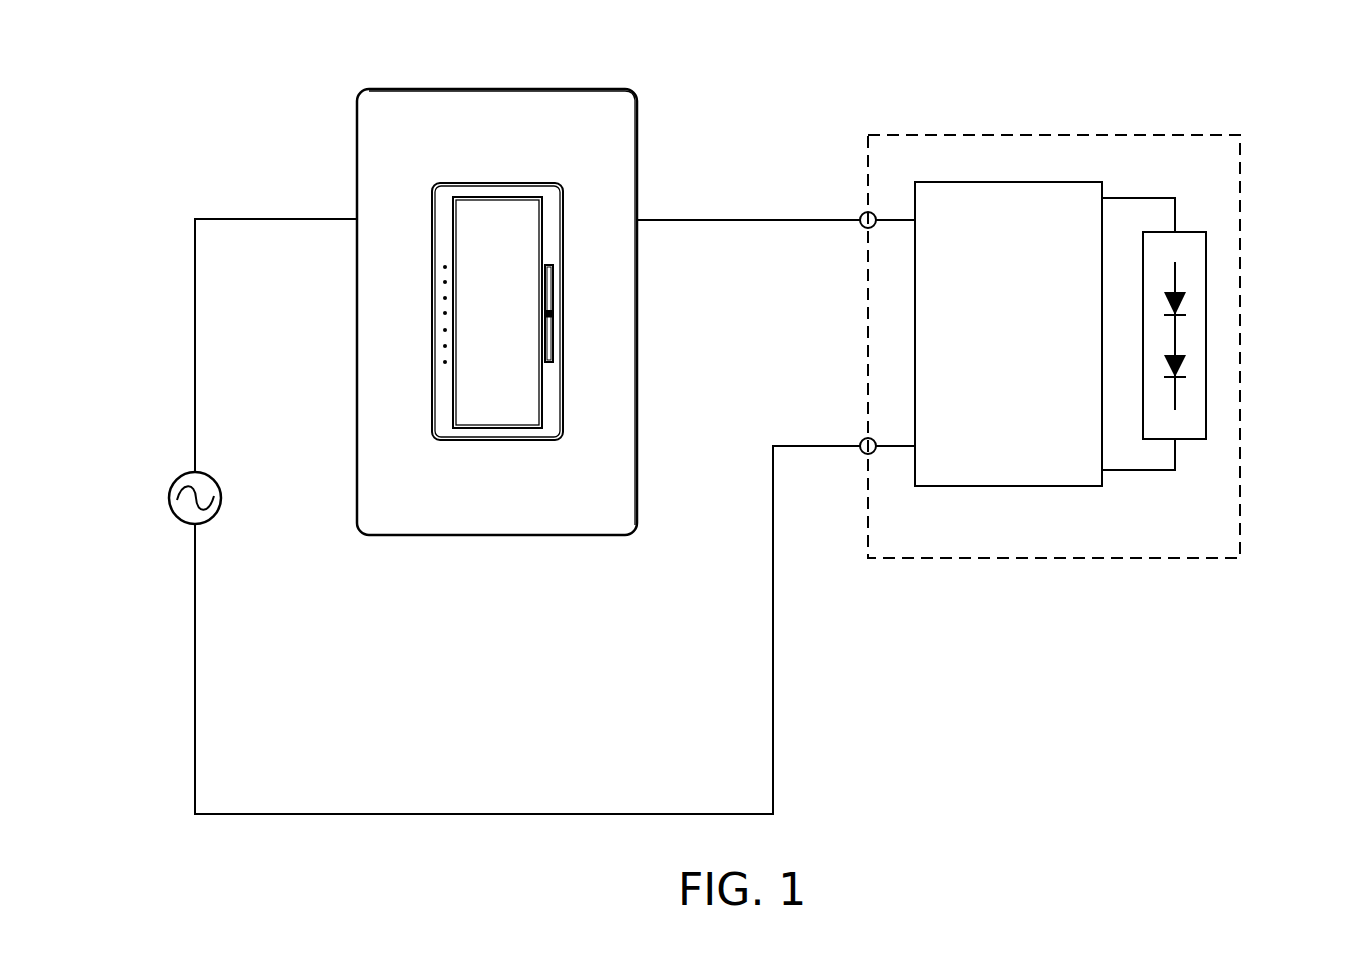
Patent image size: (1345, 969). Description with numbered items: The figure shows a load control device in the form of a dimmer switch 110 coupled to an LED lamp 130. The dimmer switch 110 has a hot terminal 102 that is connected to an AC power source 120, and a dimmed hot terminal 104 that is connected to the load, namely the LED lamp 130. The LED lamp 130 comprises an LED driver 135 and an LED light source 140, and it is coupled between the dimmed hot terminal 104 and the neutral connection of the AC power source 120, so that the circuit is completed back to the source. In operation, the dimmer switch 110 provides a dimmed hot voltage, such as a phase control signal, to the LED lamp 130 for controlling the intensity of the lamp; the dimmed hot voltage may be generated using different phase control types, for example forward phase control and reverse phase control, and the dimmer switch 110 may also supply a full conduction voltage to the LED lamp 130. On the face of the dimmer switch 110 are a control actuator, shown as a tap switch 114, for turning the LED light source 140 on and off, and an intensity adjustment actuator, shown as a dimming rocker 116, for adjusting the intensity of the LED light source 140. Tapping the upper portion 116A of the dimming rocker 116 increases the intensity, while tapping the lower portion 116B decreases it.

The hot terminal 102 is at (357, 218).
The dimmed hot terminal 104 is at (637, 219).
The dimmer switch 110 is at (470, 505).
The tap switch 114 is at (505, 395).
The dimming rocker 116 is at (568, 318).
The upper portion of the dimming rocker 116A is at (553, 281).
The lower portion of the dimming rocker 116B is at (548, 345).
The AC power source 120 is at (207, 520).
The LED lamp 130 is at (897, 135).
The LED driver 135 is at (1028, 205).
The LED light source 140 is at (1187, 419).